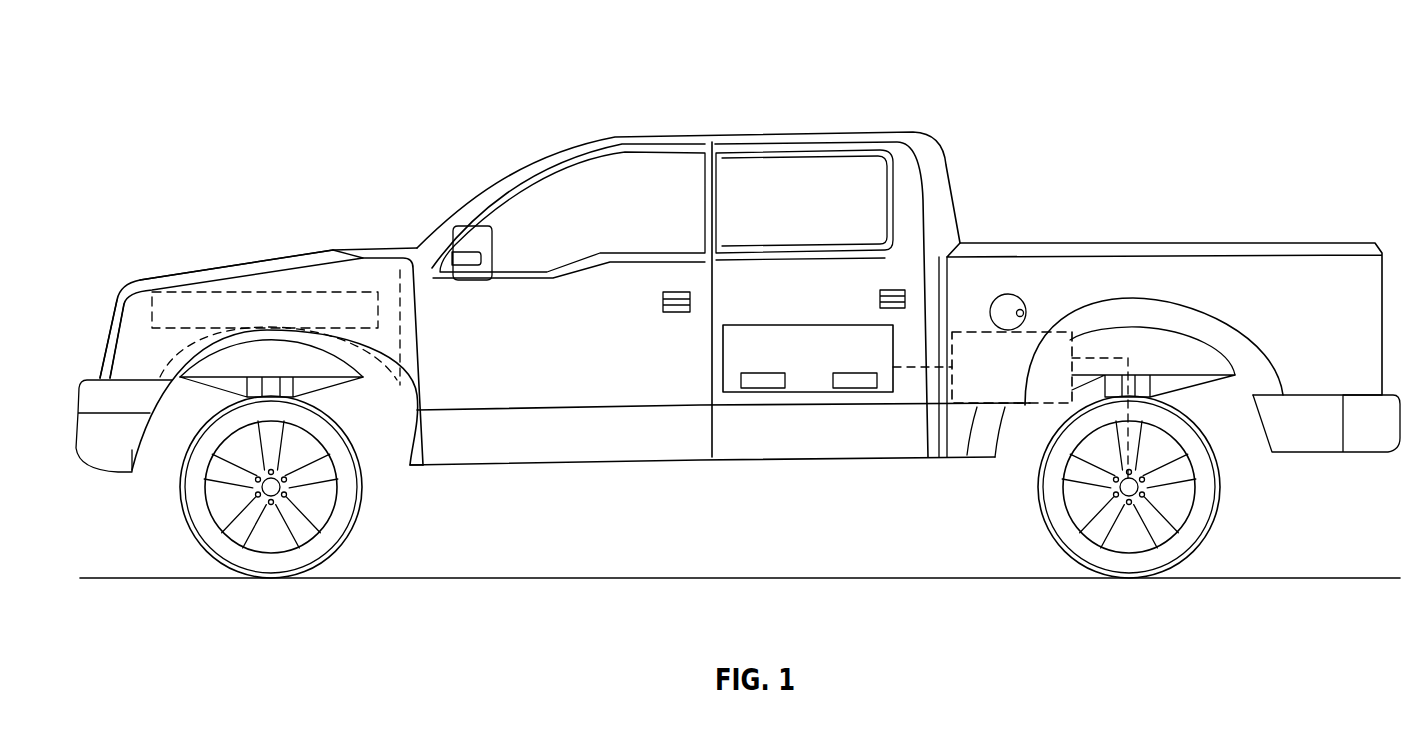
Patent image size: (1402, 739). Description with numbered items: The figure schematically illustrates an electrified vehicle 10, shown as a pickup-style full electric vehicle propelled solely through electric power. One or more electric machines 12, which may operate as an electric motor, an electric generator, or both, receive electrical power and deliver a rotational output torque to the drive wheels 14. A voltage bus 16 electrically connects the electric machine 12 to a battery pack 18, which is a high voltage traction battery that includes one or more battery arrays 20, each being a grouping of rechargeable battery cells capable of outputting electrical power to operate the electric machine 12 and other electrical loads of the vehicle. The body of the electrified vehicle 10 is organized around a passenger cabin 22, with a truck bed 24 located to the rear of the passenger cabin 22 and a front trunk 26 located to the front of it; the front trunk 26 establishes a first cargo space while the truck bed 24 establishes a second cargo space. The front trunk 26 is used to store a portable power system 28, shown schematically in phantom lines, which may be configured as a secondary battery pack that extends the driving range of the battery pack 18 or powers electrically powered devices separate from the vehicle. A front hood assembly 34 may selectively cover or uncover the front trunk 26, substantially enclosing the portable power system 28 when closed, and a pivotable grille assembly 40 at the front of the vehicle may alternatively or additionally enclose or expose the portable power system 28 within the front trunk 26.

The electrified vehicle 10 is at (734, 86).
The electric machine 12 is at (1035, 332).
The drive wheels 14 is at (252, 572).
The voltage bus 16 is at (915, 384).
The battery pack 18 is at (775, 326).
The battery arrays 20 is at (762, 390).
The passenger cabin 22 is at (630, 180).
The truck bed 24 is at (1168, 232).
The front trunk 26 is at (330, 285).
The portable power system 28 is at (276, 300).
The front hood assembly 34 is at (208, 265).
The pivotable grille assembly 40 is at (110, 328).